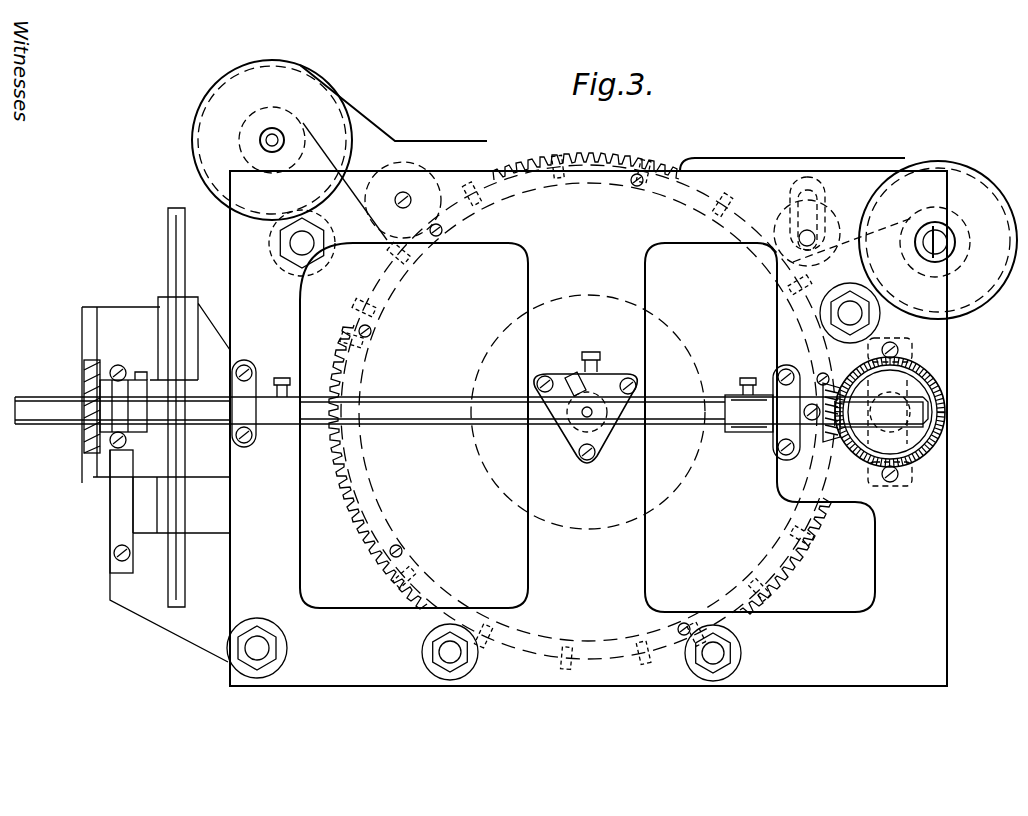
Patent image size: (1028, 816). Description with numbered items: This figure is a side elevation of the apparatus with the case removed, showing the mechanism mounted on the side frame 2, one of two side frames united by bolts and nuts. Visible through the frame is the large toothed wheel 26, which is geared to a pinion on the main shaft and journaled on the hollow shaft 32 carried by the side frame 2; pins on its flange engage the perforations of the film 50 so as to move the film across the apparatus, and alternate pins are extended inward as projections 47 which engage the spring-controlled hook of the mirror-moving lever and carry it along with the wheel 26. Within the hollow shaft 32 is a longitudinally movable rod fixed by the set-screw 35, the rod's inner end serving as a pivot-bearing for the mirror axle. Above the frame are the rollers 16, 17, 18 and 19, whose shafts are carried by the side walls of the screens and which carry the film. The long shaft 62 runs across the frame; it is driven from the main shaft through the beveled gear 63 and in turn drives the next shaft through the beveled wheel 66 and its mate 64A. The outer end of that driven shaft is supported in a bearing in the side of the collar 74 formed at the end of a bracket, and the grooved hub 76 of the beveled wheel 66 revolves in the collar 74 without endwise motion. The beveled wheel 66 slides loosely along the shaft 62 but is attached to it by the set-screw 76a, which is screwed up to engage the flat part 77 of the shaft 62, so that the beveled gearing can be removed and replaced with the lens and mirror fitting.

The side frame 2 is at (587, 375).
The roller 16 is at (262, 140).
The roller 17 is at (425, 195).
The roller 18 is at (818, 228).
The roller 19 is at (958, 243).
The wheel 26 is at (372, 556).
The hollow shaft 32 is at (578, 436).
The set-screw 35 is at (572, 376).
The pin 47 is at (650, 192).
The film 50 is at (892, 236).
The shaft 62 is at (431, 427).
The beveled gear 63 is at (937, 398).
The pinion 64A is at (832, 442).
The beveled wheel 66 is at (84, 368).
The collar 74 is at (82, 430).
The hub 76 is at (140, 380).
The set-screw 76a is at (147, 370).
The flat part 77 is at (215, 426).